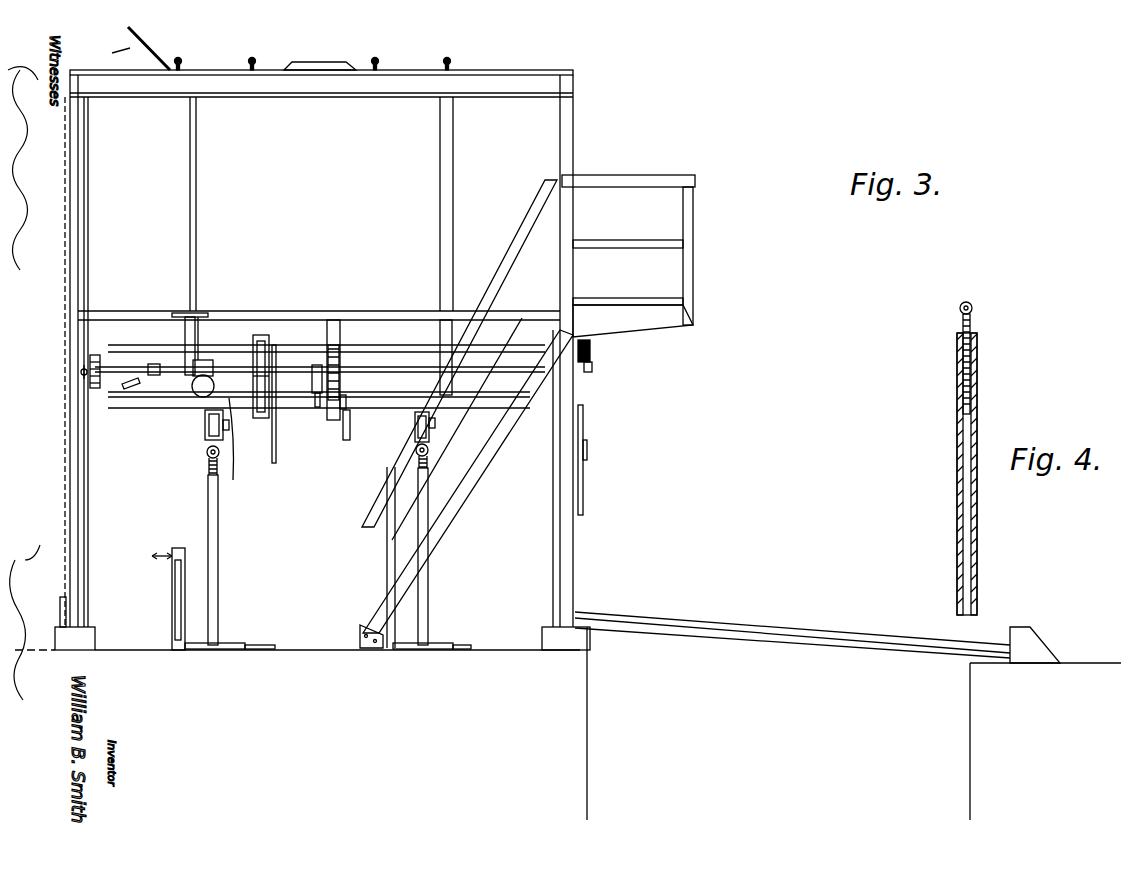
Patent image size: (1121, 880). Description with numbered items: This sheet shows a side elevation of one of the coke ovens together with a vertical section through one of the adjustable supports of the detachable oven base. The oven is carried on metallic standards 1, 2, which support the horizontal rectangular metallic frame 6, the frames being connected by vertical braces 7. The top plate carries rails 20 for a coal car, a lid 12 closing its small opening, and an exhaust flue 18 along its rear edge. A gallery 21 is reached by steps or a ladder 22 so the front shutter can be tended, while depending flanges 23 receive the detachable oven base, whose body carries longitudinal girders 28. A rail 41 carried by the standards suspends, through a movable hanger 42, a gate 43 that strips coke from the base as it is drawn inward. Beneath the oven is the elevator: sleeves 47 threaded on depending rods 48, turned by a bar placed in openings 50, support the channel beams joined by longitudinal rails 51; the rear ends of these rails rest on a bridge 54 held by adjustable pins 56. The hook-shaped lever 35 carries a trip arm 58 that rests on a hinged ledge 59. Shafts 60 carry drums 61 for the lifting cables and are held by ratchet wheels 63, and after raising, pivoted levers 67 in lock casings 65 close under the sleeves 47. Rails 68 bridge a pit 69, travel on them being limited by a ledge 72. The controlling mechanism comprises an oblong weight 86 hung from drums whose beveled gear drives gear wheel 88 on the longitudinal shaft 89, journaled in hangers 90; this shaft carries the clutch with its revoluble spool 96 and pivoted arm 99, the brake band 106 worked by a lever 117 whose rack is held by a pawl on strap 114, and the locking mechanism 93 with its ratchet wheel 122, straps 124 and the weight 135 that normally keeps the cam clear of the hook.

In FIG. 3, the metallic standard 1 is at (79, 481).
In FIG. 3, the metallic standard 2 is at (575, 548).
In FIG. 3, the horizontal rectangular metallic frame 6 is at (566, 71).
In FIG. 3, the vertical brace 7 is at (192, 173).
In FIG. 3, the lid 12 is at (328, 62).
In FIG. 3, the exhaust flue 18 is at (147, 48).
In FIG. 3, the rail 20 is at (248, 61).
In FIG. 3, the gallery 21 is at (622, 305).
In FIG. 3, the steps or ladder 22 is at (584, 428).
In FIG. 3, the depending flange 23 is at (303, 310).
In FIG. 3, the girder 28 is at (126, 350).
In FIG. 3, the hook-shaped lever 35 is at (135, 388).
In FIG. 3, the rail 41 is at (592, 367).
In FIG. 3, the movable hanger 42 is at (591, 351).
In FIG. 3, the gate 43 is at (587, 452).
In FIG. 3, the sleeve 47 is at (218, 543).
In FIG. 4, the sleeve 47 is at (957, 458).
In FIG. 3, the depending rod 48 is at (209, 477).
In FIG. 4, the depending rod 48 is at (976, 316).
In FIG. 4, the opening 50 is at (957, 436).
In FIG. 3, the longitudinal rail 51 is at (153, 378).
In FIG. 3, the bridge 54 is at (172, 600).
In FIG. 3, the adjustable pin 56 is at (175, 590).
In FIG. 3, the trip arm 58 is at (140, 412).
In FIG. 3, the ledge 59 is at (150, 556).
In FIG. 3, the shaft 60 is at (226, 447).
In FIG. 3, the drum 61 is at (205, 428).
In FIG. 3, the ratchet wheel 63 is at (212, 466).
In FIG. 3, the lock casing 65 is at (237, 643).
In FIG. 3, the pivoted lever 67 is at (262, 646).
In FIG. 3, the rail 68 is at (710, 642).
In FIG. 3, the pit 69 is at (854, 723).
In FIG. 3, the ledge 72 is at (1040, 645).
In FIG. 3, the oblong weight 86 is at (60, 615).
In FIG. 3, the beveled gear wheel 88 is at (100, 352).
In FIG. 3, the longitudinal shaft 89 is at (332, 312).
In FIG. 3, the hanger 90 is at (196, 335).
In FIG. 3, the locking mechanism 93 is at (344, 372).
In FIG. 3, the revoluble spool 96 is at (262, 340).
In FIG. 3, the arm 99 is at (200, 340).
In FIG. 3, the brake band 106 is at (245, 440).
In FIG. 3, the strap 114 is at (283, 388).
In FIG. 3, the lever 117 is at (277, 443).
In FIG. 3, the ratchet wheel 122 is at (343, 402).
In FIG. 3, the strap 124 is at (317, 408).
In FIG. 3, the weight 135 is at (346, 442).